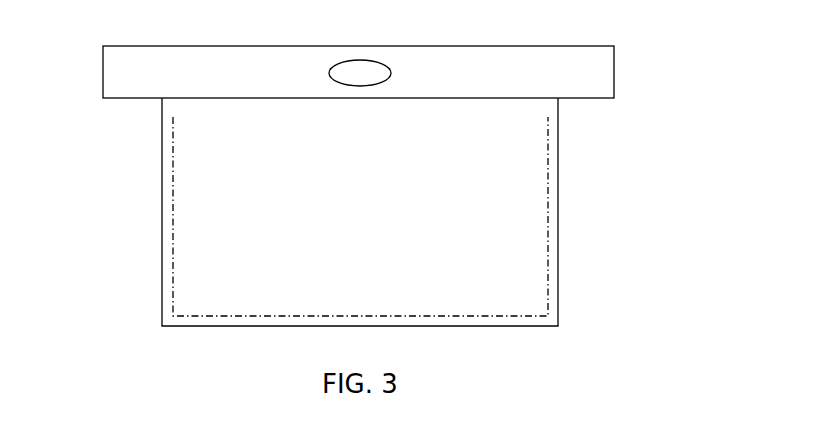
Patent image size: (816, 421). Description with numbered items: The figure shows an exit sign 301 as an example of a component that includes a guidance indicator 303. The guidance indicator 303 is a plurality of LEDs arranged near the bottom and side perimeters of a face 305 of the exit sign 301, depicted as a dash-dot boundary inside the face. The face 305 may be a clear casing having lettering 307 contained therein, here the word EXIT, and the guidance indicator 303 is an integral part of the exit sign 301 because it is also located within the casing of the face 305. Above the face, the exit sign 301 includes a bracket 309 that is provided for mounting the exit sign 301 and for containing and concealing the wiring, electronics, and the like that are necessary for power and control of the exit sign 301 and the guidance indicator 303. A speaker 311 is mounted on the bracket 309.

The exit sign 301 is at (54, 51).
The guidance indicator 303 is at (548, 268).
The face 305 is at (205, 287).
The lettering 307 is at (222, 200).
The bracket 309 is at (614, 73).
The speaker 311 is at (395, 79).